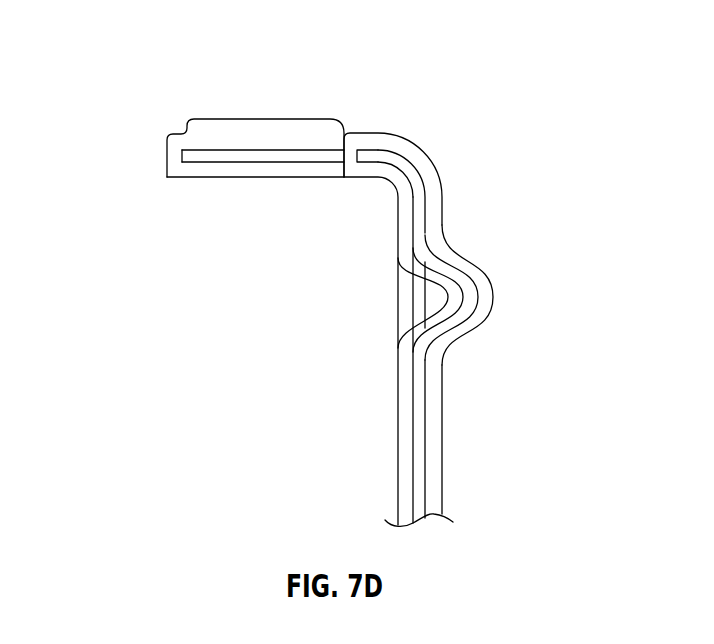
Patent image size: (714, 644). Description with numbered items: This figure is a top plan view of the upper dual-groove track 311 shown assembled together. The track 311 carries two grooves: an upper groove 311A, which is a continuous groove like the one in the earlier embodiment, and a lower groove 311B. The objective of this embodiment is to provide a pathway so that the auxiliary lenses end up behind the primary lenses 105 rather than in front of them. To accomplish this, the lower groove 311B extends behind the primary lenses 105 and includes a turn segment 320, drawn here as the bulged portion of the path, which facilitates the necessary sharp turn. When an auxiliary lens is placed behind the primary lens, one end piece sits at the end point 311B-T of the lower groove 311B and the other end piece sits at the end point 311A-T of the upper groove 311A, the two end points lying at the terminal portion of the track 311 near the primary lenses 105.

The upper dual-groove track 311 is at (128, 62).
The primary lenses 105 is at (270, 119).
The lower groove 311B is at (210, 157).
The end point 311B-T is at (183, 152).
The upper groove 311A is at (420, 213).
The end point 311A-T is at (365, 152).
The turn segment 320 is at (512, 295).